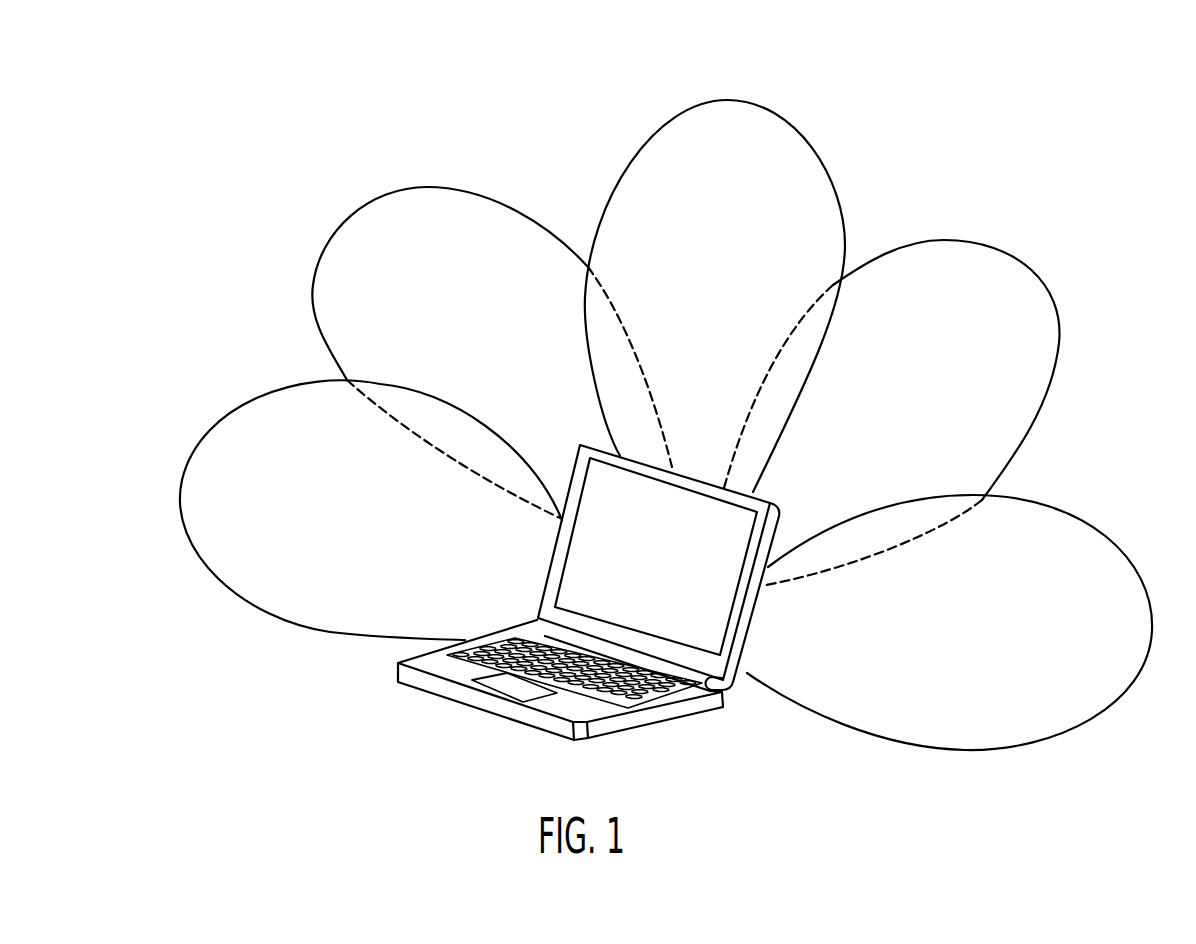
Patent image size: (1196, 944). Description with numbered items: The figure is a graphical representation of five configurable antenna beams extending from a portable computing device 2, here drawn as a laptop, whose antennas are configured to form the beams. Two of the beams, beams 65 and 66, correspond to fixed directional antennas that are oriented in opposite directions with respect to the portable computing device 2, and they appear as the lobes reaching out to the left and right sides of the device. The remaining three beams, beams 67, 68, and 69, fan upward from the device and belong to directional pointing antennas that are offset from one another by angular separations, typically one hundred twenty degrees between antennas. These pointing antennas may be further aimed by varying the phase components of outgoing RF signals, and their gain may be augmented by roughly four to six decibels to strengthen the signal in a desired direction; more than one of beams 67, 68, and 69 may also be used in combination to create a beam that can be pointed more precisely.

The portable computing device 2 is at (652, 725).
The beam 65 is at (193, 460).
The beam 66 is at (1100, 528).
The beam 67 is at (355, 215).
The beam 68 is at (732, 100).
The beam 69 is at (1028, 268).